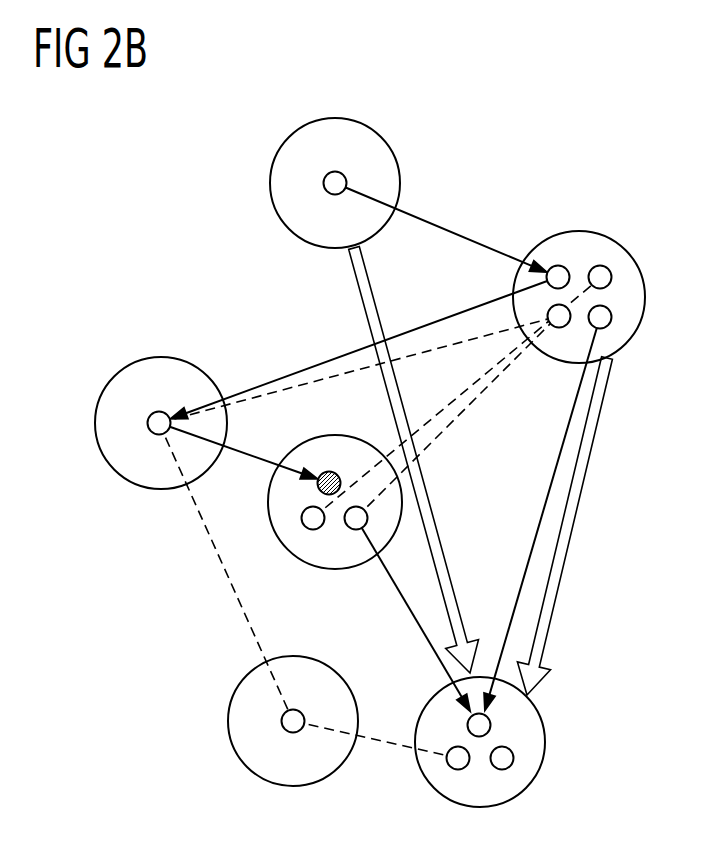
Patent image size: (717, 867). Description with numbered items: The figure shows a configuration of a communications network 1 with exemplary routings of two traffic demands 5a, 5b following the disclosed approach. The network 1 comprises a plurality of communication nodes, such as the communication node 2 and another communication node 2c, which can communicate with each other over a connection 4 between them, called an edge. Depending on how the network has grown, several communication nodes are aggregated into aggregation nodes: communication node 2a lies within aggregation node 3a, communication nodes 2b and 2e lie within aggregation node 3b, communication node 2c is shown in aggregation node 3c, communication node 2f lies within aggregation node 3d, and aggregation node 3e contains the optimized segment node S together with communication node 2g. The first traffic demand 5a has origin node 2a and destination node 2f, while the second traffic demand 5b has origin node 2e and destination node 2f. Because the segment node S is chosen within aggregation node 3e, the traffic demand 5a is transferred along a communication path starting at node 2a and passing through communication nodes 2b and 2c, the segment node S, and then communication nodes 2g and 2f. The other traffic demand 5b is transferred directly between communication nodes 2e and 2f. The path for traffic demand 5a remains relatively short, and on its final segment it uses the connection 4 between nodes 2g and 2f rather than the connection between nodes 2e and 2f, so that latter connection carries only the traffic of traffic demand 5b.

The communications network 1 is at (136, 217).
The communication node 2 is at (282, 716).
The communication node 2a is at (335, 171).
The communication node 2b is at (558, 265).
The communication node 2c is at (159, 411).
The communication node 2e is at (611, 316).
The communication node 2f is at (491, 725).
The communication node 2g is at (356, 530).
The aggregation node 3a is at (270, 185).
The aggregation node 3b is at (578, 232).
The aggregation node 3c is at (95, 421).
The aggregation node 3d is at (480, 807).
The aggregation node 3e is at (291, 560).
The connection 4 is at (237, 594).
The traffic demand 5a is at (352, 282).
The traffic demand 5b is at (579, 511).
The segment node S is at (332, 471).